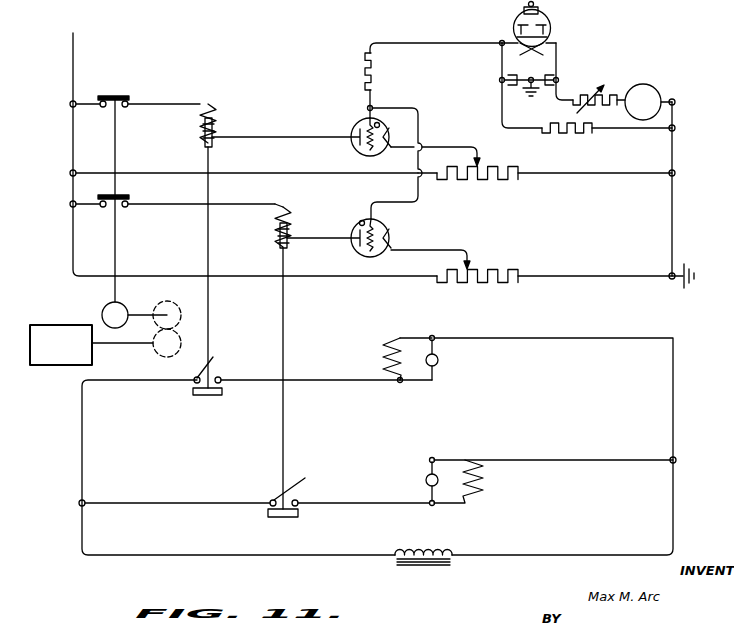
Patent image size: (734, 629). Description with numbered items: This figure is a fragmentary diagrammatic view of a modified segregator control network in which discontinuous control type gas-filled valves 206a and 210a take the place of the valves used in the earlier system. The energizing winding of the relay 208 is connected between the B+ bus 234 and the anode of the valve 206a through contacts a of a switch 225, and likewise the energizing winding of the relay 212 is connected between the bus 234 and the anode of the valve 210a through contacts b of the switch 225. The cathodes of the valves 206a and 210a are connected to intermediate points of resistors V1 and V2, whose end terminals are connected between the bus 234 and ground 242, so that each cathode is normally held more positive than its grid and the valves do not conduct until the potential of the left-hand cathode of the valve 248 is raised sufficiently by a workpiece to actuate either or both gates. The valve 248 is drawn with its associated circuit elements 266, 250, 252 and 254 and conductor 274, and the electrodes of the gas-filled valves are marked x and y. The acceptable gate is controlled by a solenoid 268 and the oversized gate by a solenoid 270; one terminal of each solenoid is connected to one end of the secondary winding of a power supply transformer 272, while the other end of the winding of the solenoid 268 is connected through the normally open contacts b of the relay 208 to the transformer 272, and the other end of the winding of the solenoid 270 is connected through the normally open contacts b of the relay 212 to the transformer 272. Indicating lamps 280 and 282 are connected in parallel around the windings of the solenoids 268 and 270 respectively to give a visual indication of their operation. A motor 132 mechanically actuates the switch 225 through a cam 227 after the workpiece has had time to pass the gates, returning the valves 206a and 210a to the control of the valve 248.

The B+ bus 234 is at (74, 55).
The relay 208 is at (215, 120).
The gas-filled valve 206a is at (352, 128).
The resistor 266 is at (377, 73).
The valve 248 is at (552, 28).
The variable resistor 250 is at (598, 92).
The meter 252 is at (645, 95).
The ground 242 is at (675, 127).
The resistor 254 is at (583, 133).
The resistor V1 is at (502, 165).
The resistor V2 is at (505, 270).
The relay 212 is at (295, 213).
The gas-filled valve 210a is at (380, 215).
The switch 225 is at (117, 253).
The cam 227 is at (107, 308).
The motor 132 is at (70, 353).
The solenoid 268 is at (380, 355).
The indicating lamp 280 is at (438, 360).
The conductor 274 is at (557, 340).
The indicating lamp 282 is at (425, 480).
The solenoid 270 is at (483, 485).
The power supply transformer 272 is at (455, 558).
The contacts of switch 225 a is at (105, 107).
The contacts b is at (110, 205).
The tube electrode x is at (401, 190).
The tube electrode y is at (401, 175).